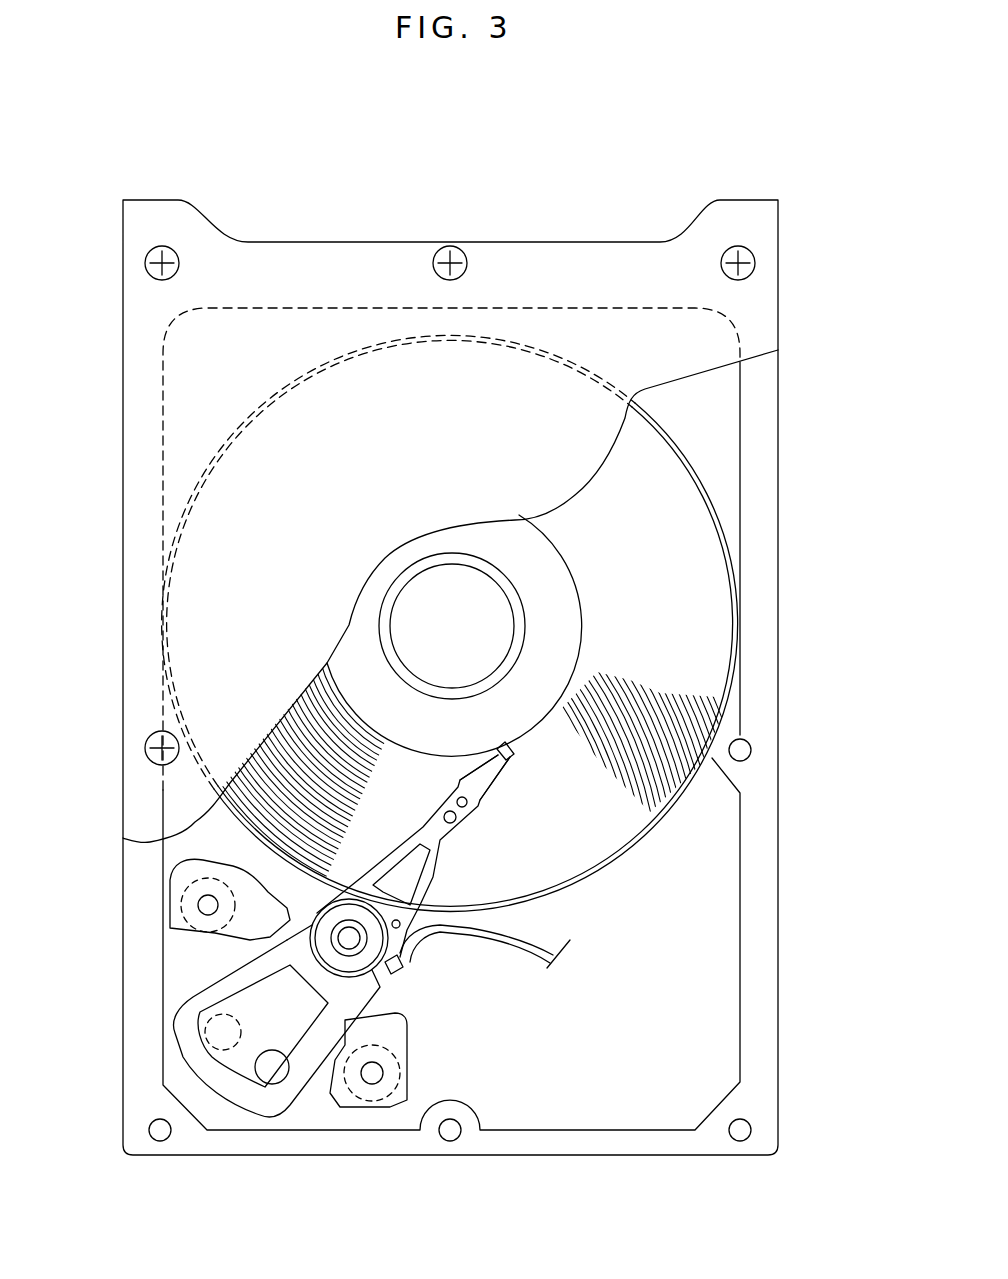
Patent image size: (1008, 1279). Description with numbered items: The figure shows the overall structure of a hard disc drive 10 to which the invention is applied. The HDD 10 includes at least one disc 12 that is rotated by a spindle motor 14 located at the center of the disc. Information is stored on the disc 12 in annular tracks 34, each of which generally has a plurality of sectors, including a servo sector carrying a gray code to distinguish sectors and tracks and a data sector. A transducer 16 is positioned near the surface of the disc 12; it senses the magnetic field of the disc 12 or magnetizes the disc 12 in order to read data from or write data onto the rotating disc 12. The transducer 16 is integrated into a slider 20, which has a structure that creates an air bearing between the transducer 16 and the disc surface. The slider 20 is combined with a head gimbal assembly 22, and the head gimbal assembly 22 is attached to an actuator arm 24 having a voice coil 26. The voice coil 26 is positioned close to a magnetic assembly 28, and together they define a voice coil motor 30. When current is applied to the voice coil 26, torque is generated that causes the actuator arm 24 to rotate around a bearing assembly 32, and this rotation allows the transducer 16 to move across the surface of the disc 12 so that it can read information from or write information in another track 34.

The hard disc drive 10 is at (586, 159).
The disc 12 is at (700, 560).
The spindle motor 14 is at (428, 605).
The transducer 16 is at (514, 750).
The slider 20 is at (495, 765).
The head gimbal assembly 22 is at (460, 854).
The actuator arm 24 is at (262, 958).
The voice coil 26 is at (195, 1024).
The magnetic assembly 28 is at (207, 968).
The voice coil motor 30 is at (322, 1090).
The bearing assembly 32 is at (360, 947).
The annular tracks 34 is at (315, 745).